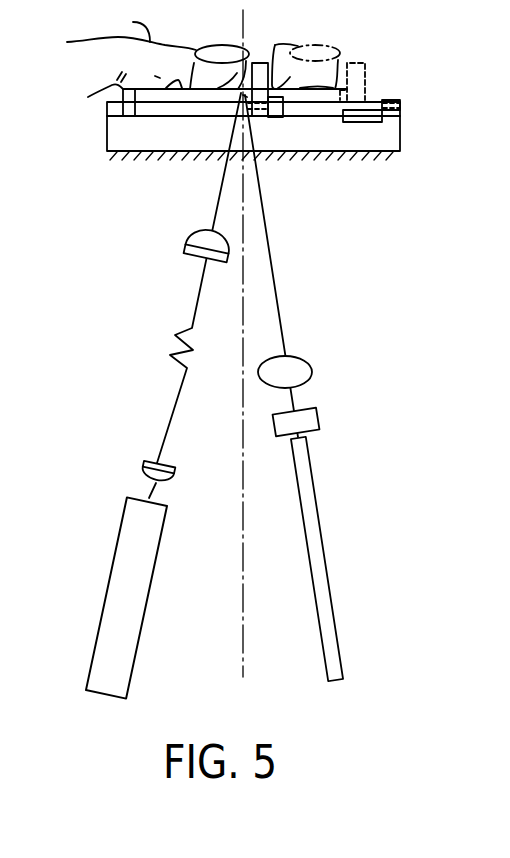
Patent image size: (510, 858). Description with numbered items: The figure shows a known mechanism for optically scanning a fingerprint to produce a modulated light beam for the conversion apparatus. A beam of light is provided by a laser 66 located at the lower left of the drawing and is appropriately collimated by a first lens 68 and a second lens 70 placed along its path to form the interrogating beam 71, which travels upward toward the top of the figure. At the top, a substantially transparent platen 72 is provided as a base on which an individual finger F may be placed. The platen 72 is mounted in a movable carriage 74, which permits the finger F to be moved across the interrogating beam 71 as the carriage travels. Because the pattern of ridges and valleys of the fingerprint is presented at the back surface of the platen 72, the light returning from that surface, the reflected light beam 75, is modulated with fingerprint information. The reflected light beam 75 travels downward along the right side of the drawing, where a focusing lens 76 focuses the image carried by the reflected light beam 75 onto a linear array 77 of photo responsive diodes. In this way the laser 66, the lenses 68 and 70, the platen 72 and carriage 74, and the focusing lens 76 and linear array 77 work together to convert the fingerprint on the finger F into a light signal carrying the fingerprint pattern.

The finger F is at (127, 28).
The laser 66 is at (112, 575).
The lens 68 is at (142, 472).
The lens 70 is at (196, 251).
The interrogating beam 71 is at (222, 182).
The platen 72 is at (176, 99).
The movable carriage 74 is at (246, 97).
The reflected light beam 75 is at (281, 318).
The focusing lens 76 is at (313, 370).
The linear array of photo responsive diodes 77 is at (318, 418).